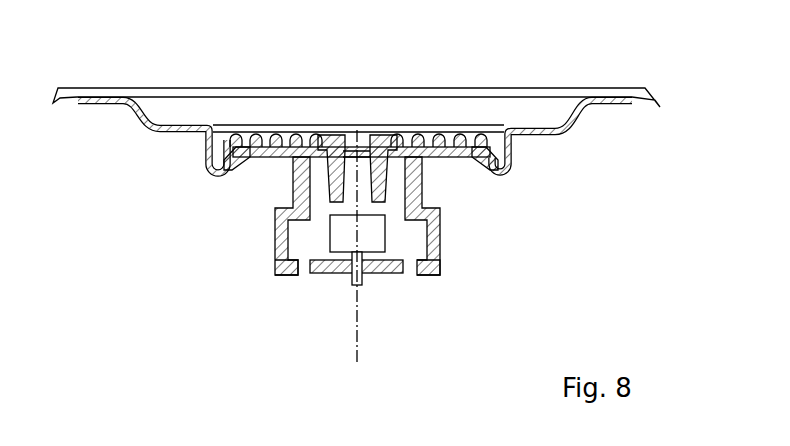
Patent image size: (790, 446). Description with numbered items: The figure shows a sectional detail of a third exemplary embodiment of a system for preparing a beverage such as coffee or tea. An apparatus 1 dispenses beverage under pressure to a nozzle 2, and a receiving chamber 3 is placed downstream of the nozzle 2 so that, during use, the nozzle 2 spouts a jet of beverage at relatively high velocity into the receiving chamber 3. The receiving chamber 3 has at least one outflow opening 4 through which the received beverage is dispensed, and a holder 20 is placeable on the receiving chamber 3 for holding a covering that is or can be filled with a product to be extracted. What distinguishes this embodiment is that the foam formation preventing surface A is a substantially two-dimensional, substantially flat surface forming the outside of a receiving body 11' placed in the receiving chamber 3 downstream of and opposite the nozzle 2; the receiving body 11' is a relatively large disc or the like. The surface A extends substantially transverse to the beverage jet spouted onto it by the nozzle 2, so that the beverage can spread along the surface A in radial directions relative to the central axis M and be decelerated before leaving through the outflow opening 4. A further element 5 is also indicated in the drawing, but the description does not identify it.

The apparatus 1 is at (312, 69).
The nozzle 2 is at (358, 147).
The receiving chamber 3 is at (316, 251).
The outflow opening 4 is at (303, 277).
The base plate 5 is at (383, 277).
The receiving body 11' is at (347, 290).
The holder 20 is at (573, 114).
The foam formation preventing surface A is at (337, 213).
The central axis M is at (358, 352).